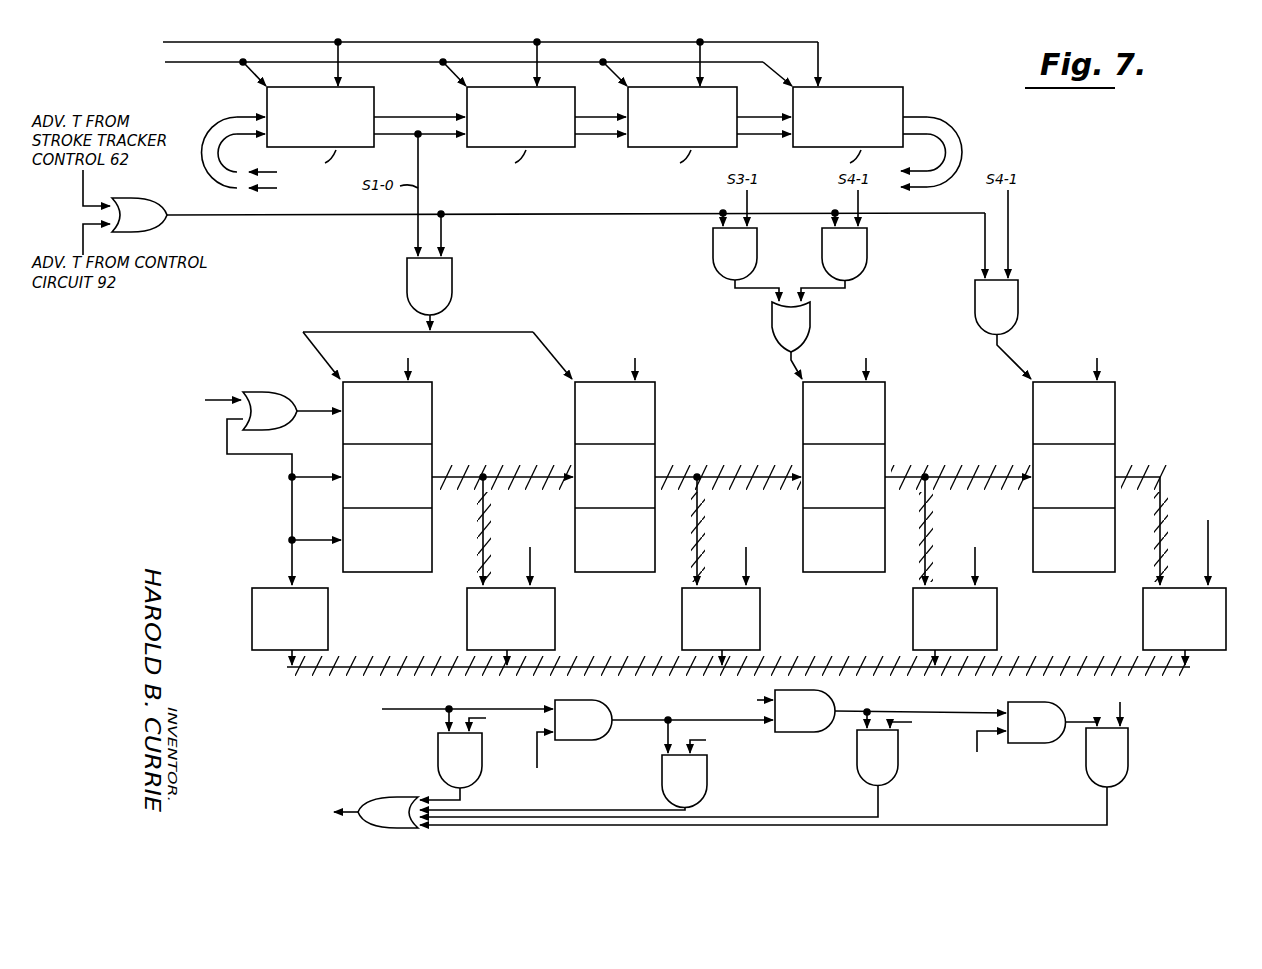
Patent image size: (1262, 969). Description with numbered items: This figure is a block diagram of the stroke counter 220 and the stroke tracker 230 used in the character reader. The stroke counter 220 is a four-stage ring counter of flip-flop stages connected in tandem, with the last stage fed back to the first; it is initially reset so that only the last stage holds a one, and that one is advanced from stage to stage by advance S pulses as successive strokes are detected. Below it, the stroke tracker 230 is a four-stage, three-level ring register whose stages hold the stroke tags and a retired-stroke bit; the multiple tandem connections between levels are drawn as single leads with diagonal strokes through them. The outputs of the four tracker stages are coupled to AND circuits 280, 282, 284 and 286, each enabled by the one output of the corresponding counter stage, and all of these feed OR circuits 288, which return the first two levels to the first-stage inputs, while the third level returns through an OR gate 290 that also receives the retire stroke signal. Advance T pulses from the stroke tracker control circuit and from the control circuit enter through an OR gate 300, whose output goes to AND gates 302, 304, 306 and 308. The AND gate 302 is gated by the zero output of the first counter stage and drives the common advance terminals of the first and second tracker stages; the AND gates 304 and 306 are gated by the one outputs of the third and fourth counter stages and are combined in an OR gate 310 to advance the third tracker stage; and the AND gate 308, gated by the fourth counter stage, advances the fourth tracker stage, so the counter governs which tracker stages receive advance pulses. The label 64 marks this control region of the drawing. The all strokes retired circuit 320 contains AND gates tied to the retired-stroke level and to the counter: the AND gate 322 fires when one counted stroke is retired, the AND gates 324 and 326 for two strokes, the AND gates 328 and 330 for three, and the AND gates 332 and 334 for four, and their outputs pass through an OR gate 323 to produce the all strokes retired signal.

The stroke counter 220 is at (718, 36).
The OR gate 300 is at (157, 204).
The AND gate 302 is at (407, 272).
The AND gate 304 is at (713, 240).
The AND gate 306 is at (867, 250).
The AND gate 308 is at (1018, 296).
The OR gate 310 is at (772, 330).
The stroke tracker control 64 is at (1106, 243).
The stroke tracker 230 is at (598, 288).
The OR gate 290 is at (276, 384).
The OR circuits 288 is at (328, 614).
The AND circuits 280 is at (555, 614).
The AND circuits 282 is at (760, 614).
The AND circuits 284 is at (997, 611).
The AND circuits 286 is at (1143, 634).
The all strokes retired circuit 320 is at (697, 704).
The AND gate 322 is at (438, 748).
The OR gate 323 is at (402, 796).
The AND gate 324 is at (662, 786).
The AND gate 326 is at (639, 712).
The AND gate 328 is at (857, 775).
The AND gate 330 is at (829, 692).
The AND gate 332 is at (1128, 766).
The AND gate 334 is at (1038, 745).